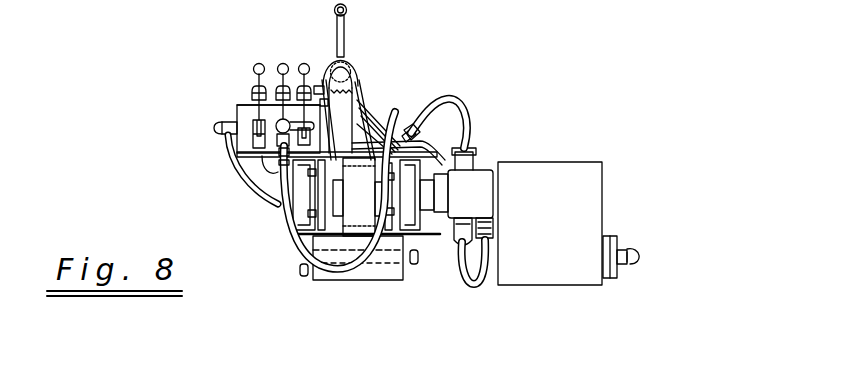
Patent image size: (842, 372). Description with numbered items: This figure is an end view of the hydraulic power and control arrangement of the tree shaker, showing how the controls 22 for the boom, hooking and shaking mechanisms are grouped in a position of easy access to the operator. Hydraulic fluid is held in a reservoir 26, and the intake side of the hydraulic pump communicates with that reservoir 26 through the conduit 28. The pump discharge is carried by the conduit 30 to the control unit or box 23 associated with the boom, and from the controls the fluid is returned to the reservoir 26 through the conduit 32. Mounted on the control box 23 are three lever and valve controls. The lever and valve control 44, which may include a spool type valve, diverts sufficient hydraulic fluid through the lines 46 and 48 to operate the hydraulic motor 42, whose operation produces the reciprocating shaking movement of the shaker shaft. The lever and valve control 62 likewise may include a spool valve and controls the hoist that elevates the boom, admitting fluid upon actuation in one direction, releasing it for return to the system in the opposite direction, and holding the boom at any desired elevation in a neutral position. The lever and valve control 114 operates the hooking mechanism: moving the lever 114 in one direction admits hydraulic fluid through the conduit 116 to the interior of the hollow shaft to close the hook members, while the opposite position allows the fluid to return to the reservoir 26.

The controls 22 is at (242, 98).
The control unit or box 23 is at (237, 111).
The reservoir 26 is at (553, 164).
The conduit 28 is at (639, 255).
The conduit 30 is at (270, 200).
The conduit 32 is at (424, 150).
The hydraulic motor 42 is at (483, 166).
The lever and valve control 44 is at (304, 63).
The line 46 is at (463, 114).
The line 48 is at (470, 286).
The lever and valve control 62 is at (283, 63).
The lever and valve control 114 is at (258, 63).
The conduit 116 is at (293, 252).